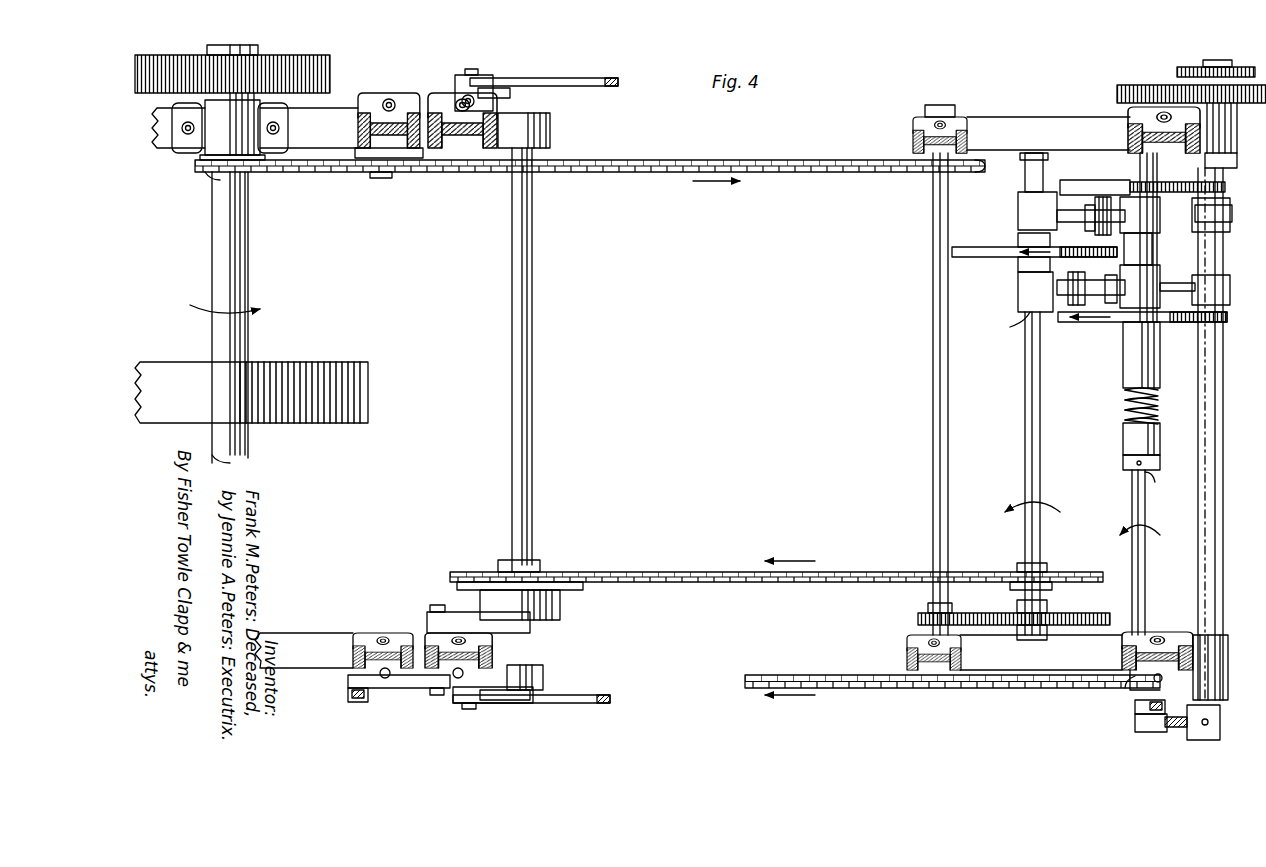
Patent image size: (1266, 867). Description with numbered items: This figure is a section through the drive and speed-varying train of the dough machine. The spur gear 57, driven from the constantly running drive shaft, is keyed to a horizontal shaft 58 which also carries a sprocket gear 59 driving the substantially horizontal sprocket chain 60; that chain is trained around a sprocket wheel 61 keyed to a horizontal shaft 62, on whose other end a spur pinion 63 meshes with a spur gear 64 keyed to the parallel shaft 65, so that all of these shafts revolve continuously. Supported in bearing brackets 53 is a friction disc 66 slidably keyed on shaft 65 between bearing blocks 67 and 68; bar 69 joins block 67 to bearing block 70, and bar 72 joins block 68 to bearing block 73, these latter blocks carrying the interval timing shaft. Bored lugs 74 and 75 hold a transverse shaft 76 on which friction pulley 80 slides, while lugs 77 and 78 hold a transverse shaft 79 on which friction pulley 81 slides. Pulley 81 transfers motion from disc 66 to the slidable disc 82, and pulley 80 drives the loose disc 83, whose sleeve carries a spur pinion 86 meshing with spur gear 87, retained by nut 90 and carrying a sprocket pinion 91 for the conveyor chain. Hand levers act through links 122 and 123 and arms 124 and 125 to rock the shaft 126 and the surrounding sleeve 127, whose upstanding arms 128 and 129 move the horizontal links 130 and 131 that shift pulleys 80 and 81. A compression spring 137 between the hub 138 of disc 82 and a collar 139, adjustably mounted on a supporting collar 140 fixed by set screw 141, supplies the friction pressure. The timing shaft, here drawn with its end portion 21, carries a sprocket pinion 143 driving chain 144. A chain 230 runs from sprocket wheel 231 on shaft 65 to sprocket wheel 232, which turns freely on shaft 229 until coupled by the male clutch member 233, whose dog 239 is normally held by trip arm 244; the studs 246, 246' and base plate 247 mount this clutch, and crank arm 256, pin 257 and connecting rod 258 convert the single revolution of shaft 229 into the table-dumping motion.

The spur gear 57 is at (315, 62).
The horizontal shaft 58 is at (250, 258).
The sprocket gear 59 is at (210, 178).
The sprocket chain 60 is at (600, 172).
The sprocket wheel 61 is at (945, 182).
The horizontal shaft 62 is at (932, 272).
The spur pinion 63 is at (917, 619).
The spur gear 64 is at (1072, 623).
The shaft 65 is at (1024, 420).
The friction disc 66 is at (975, 247).
The bearing block 67 is at (1020, 200).
The bearing block 68 is at (1018, 288).
The integral bar 69 is at (1068, 200).
The bearing block 70 is at (1152, 240).
The connecting bar 72 is at (1120, 340).
The bearing block 73 is at (1150, 268).
The bored lug 74 is at (1055, 212).
The bored lug 75 is at (1150, 208).
The transverse shaft 76 is at (1088, 222).
The integral lug 77 is at (1024, 312).
The integral lug 78 is at (1120, 300).
The transverse shaft 79 is at (1098, 295).
The friction pulley 80 is at (1103, 197).
The friction pulley 81 is at (1075, 305).
The disc 82 is at (1228, 318).
The disc 83 is at (1226, 187).
The spur pinion 86 is at (1145, 85).
The spur gear 87 is at (1240, 107).
The nut 90 is at (1237, 160).
The sprocket pinion 91 is at (1238, 67).
The shaft 21 is at (1132, 487).
The bearing bracket 53 is at (382, 633).
The link 122 is at (1170, 728).
The link 123 is at (1140, 732).
The arm 124 is at (1195, 730).
The arm 125 is at (1135, 708).
The shaft 126 is at (1223, 256).
The sleeve 127 is at (1223, 560).
The upstanding arm 128 is at (1230, 230).
The upstanding arm 129 is at (1230, 287).
The link 130 is at (1232, 214).
The link 131 is at (1177, 295).
The compression spring 137 is at (1125, 410).
The hub 138 is at (1123, 382).
The collar 139 is at (1123, 440).
The supporting collar 140 is at (1123, 463).
The set screw 141 is at (1155, 480).
The sprocket pinion 143 is at (1130, 690).
The drive chain 144 is at (1040, 688).
The shaft 229 is at (534, 342).
The chain 230 is at (770, 582).
The sprocket wheel 231 is at (1045, 566).
The sprocket wheel 232 is at (540, 565).
The male clutch member 233 is at (562, 610).
The dog 239 is at (540, 635).
The trip arm 244 is at (460, 610).
The stud 246 is at (422, 663).
The stud 246' is at (343, 708).
The base plate 247 is at (362, 700).
The crank arm 256 is at (500, 700).
The pin 257 is at (478, 60).
The connecting rod 258 is at (552, 78).